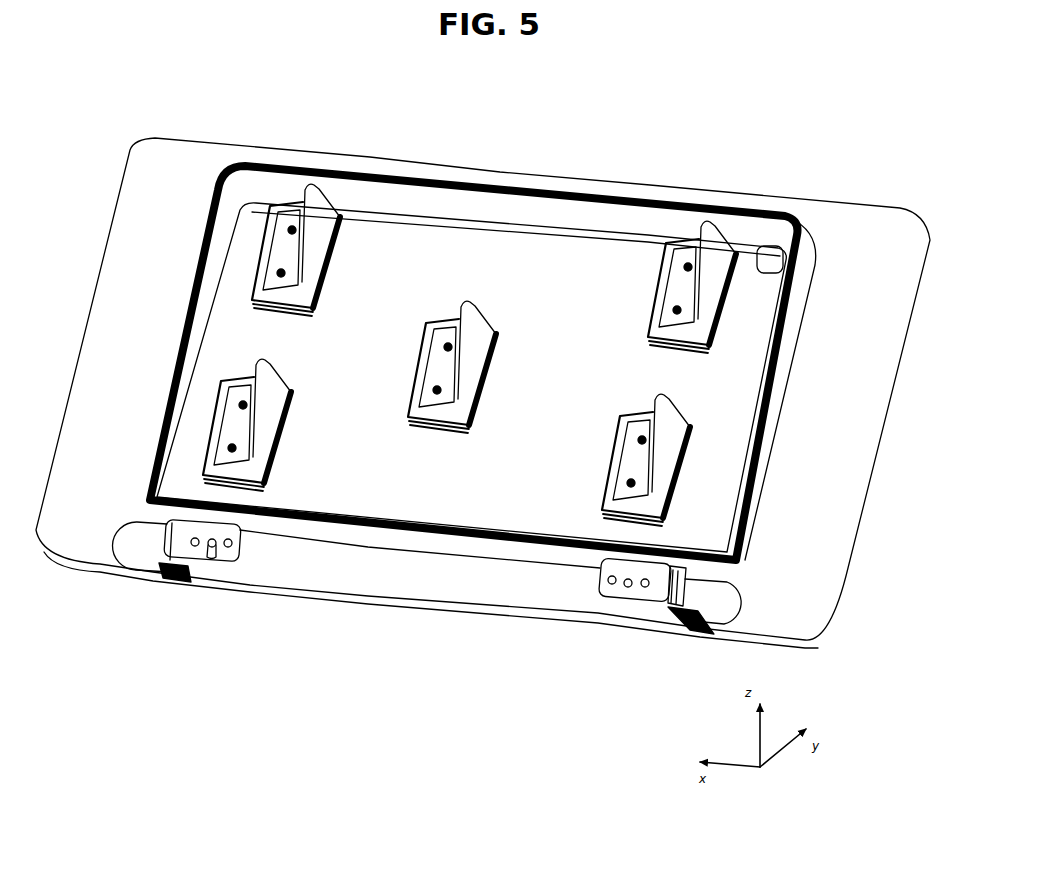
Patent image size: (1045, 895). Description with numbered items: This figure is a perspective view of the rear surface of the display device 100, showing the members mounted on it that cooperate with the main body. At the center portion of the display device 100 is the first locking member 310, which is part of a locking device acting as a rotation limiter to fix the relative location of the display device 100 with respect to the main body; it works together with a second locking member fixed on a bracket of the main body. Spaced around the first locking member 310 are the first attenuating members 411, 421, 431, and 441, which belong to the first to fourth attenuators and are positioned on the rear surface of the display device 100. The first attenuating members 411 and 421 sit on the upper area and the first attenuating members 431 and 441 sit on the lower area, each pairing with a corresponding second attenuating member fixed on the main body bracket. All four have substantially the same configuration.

The display device 100 is at (902, 208).
The first locking member 310 is at (477, 313).
The first attenuating member 411 is at (317, 197).
The first attenuating member 421 is at (273, 377).
The first attenuating member 431 is at (717, 233).
The first attenuating member 441 is at (673, 413).